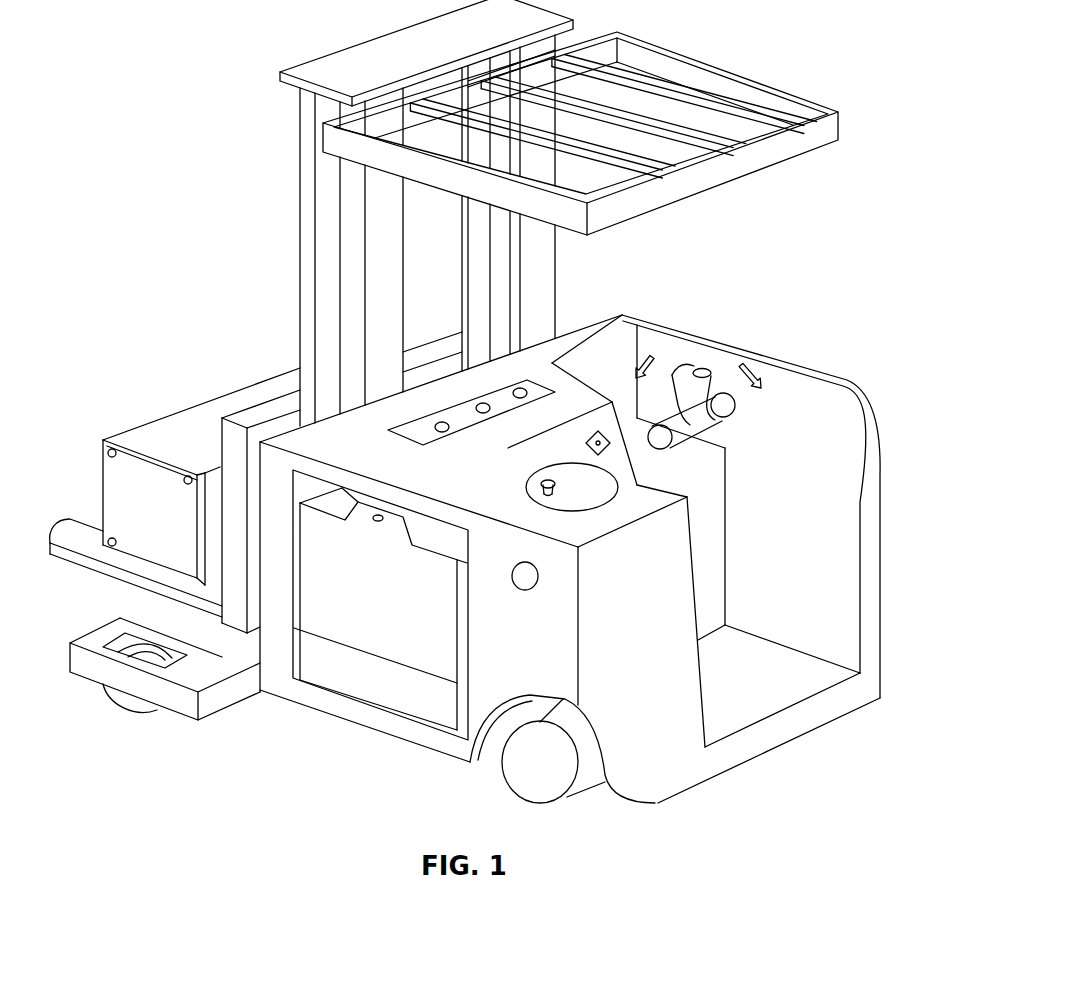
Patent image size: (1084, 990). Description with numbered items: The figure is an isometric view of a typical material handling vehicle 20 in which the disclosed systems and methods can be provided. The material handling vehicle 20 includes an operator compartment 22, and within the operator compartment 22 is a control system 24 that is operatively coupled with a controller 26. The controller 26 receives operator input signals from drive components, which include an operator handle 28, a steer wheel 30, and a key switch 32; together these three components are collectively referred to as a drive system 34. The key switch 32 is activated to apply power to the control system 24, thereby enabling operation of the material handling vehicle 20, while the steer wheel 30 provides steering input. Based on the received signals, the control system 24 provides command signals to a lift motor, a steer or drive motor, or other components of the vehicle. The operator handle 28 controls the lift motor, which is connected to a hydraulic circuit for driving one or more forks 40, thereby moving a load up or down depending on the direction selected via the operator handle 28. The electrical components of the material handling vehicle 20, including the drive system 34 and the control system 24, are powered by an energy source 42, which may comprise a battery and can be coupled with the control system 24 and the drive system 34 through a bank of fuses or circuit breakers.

The material handling vehicle 20 is at (760, 42).
The operator compartment 22 is at (882, 404).
The control system 24 is at (404, 405).
The controller 26 is at (462, 412).
The operator handle 28 is at (714, 360).
The steer wheel 30 is at (576, 498).
The key switch 32 is at (607, 405).
The drive system 34 is at (736, 431).
The forks 40 is at (78, 560).
The energy source 42 is at (358, 632).